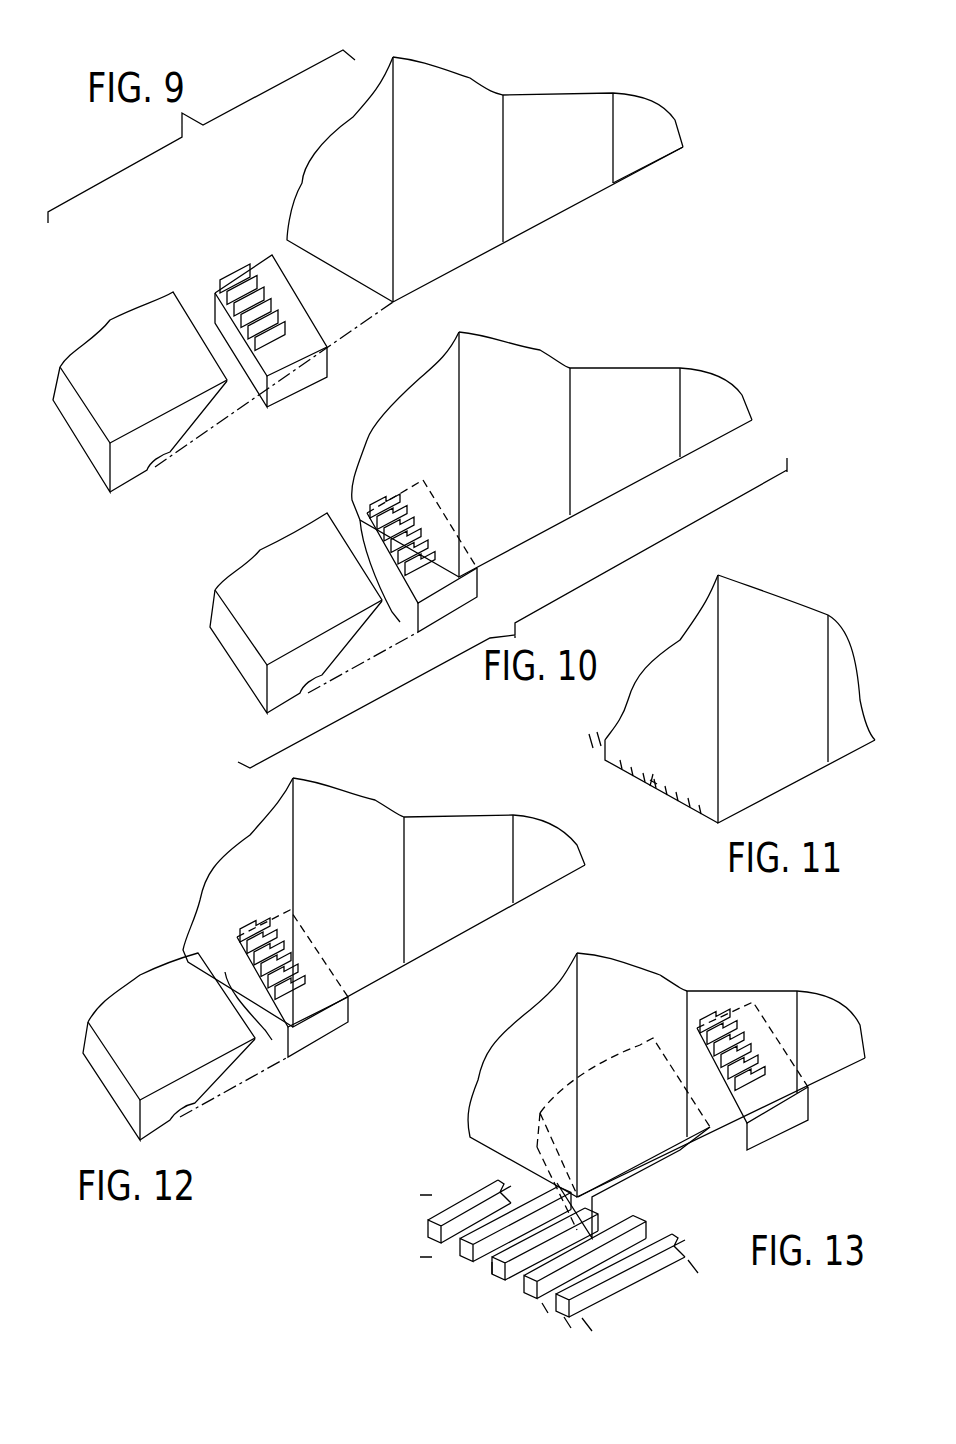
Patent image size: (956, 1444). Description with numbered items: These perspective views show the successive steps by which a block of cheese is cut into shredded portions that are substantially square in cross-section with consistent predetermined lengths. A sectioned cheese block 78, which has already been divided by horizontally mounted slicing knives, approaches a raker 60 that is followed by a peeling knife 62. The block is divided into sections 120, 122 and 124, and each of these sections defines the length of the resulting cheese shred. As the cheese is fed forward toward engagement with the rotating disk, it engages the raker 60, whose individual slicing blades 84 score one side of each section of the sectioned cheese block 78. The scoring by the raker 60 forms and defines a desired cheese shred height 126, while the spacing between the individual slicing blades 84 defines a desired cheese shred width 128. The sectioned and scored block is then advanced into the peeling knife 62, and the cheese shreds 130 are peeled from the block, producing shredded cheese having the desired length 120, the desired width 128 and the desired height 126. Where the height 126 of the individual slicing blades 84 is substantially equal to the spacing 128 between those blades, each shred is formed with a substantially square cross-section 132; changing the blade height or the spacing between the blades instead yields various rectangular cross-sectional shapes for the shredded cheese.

In FIG. 9, the raker 60 is at (280, 380).
In FIG. 10, the raker 60 is at (460, 597).
In FIG. 12, the raker 60 is at (310, 1033).
In FIG. 13, the raker 60 is at (775, 1125).
In FIG. 9, the peeling knife 62 is at (154, 380).
In FIG. 10, the peeling knife 62 is at (310, 603).
In FIG. 12, the peeling knife 62 is at (183, 1037).
In FIG. 13, the peeling knife 62 is at (637, 1123).
In FIG. 9, the sectioned cheese block 78 is at (557, 226).
In FIG. 10, the sectioned cheese block 78 is at (608, 508).
In FIG. 11, the sectioned cheese block 78 is at (783, 797).
In FIG. 12, the sectioned cheese block 78 is at (442, 953).
In FIG. 13, the sectioned cheese block 78 is at (695, 978).
In FIG. 10, the individual slicing blades 84 is at (407, 565).
In FIG. 9, the section 120 is at (503, 162).
In FIG. 13, the section 120 is at (692, 1267).
In FIG. 9, the section 122 is at (613, 142).
In FIG. 9, the section 124 is at (684, 146).
In FIG. 11, the cheese shred height 126 is at (597, 742).
In FIG. 13, the cheese shred height 126 is at (425, 1197).
In FIG. 11, the cheese shred width 128 is at (657, 778).
In FIG. 13, the cheese shred width 128 is at (533, 1307).
In FIG. 13, the cheese shreds 130 is at (455, 1197).
In FIG. 13, the square cross-section 132 is at (495, 1273).